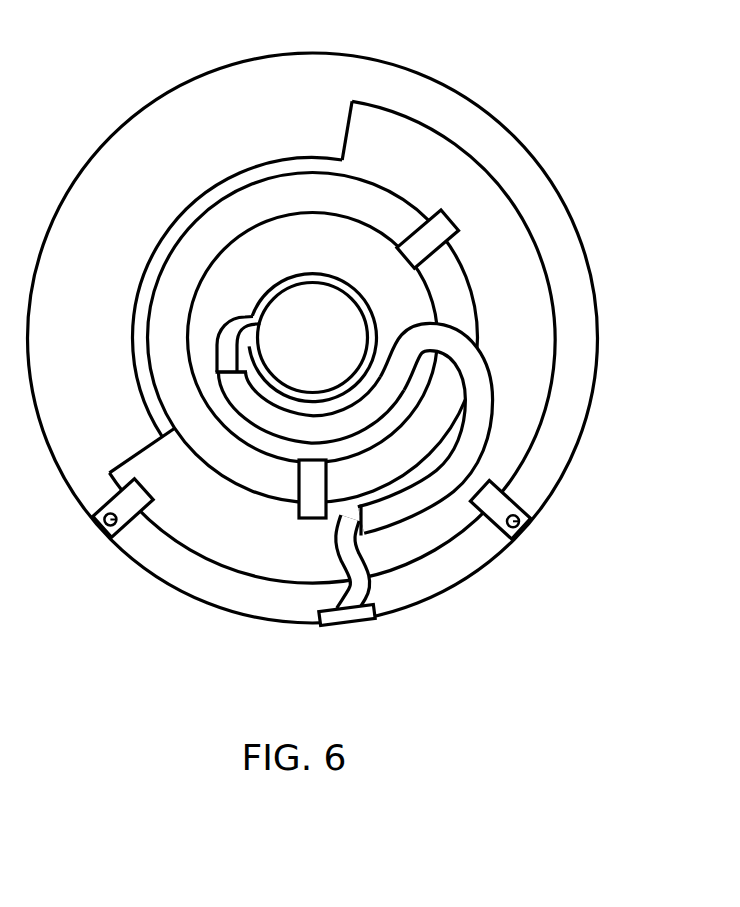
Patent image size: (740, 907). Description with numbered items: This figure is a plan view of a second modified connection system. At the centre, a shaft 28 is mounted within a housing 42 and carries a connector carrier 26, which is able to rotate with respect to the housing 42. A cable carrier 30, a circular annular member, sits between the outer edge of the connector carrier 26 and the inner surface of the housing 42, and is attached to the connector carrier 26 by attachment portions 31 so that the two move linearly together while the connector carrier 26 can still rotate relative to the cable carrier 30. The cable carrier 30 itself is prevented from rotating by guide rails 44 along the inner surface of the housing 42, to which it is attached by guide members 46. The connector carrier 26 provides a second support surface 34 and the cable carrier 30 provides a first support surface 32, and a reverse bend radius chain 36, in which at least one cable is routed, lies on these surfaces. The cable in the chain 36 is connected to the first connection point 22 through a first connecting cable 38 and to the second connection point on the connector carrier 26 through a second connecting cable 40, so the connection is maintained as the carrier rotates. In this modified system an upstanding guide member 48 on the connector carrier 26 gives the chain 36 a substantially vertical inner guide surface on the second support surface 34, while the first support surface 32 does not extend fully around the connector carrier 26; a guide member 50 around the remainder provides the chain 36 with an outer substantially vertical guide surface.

The first connection point 22 is at (358, 617).
The connector carrier 26 is at (197, 330).
The shaft 28 is at (293, 353).
The cable carrier 30 is at (507, 215).
The attachment portions 31 is at (440, 230).
The first support surface 32 is at (365, 168).
The second support surface 34 is at (293, 263).
The reverse bend radius chain 36 is at (478, 382).
The first connecting cable 38 is at (338, 598).
The second connecting cable 40 is at (243, 318).
The housing 42 is at (448, 83).
The guide rails 44 is at (104, 523).
The guide members 46 is at (127, 517).
The upstanding guide member 48 is at (278, 285).
The guide member 50 is at (248, 173).